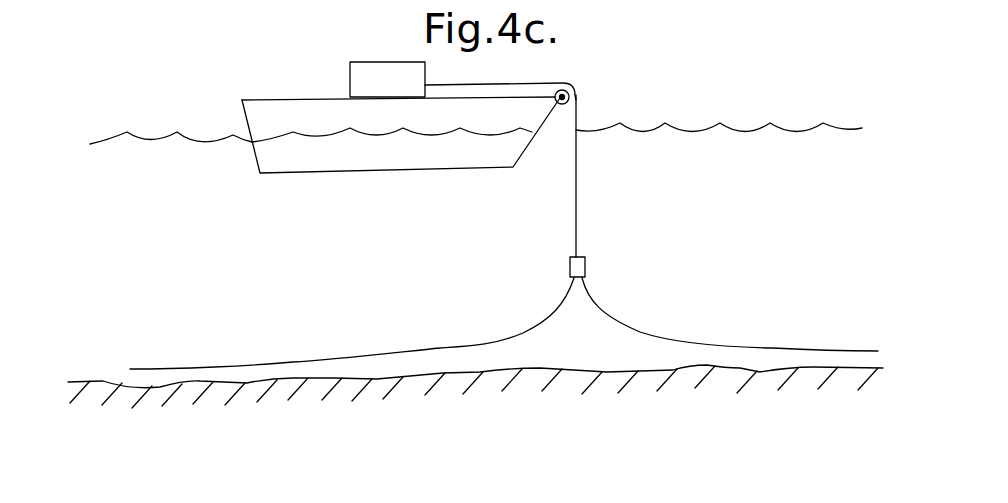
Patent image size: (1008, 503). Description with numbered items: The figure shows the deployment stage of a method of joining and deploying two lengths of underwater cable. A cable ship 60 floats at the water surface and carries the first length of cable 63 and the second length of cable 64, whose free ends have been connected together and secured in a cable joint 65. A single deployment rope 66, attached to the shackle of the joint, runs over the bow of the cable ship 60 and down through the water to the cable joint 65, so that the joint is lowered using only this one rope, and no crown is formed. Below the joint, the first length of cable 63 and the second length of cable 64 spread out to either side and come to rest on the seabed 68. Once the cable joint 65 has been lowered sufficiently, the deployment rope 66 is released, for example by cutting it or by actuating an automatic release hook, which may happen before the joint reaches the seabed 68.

The cable ship 60 is at (285, 98).
The deployment rope 66 is at (577, 210).
The cable joint 65 is at (568, 260).
The second length of cable 64 is at (453, 345).
The first length of cable 63 is at (680, 340).
The seabed 68 is at (590, 363).